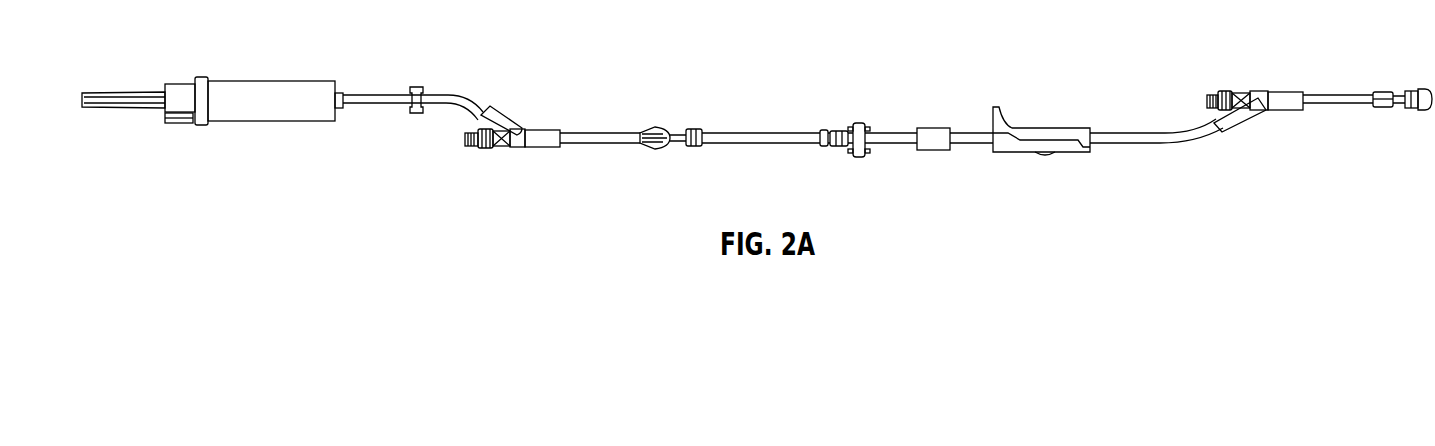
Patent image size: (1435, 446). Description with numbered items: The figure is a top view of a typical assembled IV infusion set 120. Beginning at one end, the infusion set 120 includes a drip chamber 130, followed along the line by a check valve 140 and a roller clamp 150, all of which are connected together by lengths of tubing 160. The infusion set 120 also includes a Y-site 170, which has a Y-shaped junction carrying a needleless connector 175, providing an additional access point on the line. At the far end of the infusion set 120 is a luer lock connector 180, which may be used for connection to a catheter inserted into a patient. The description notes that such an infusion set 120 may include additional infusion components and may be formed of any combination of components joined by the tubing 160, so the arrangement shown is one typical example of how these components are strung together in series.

The infusion set 120 is at (1235, 62).
The drip chamber 130 is at (272, 81).
The check valve 140 is at (857, 122).
The roller clamp 150 is at (1040, 128).
The tubing 160 is at (736, 133).
The Y-site 170 is at (511, 118).
The needleless connector 175 is at (1208, 95).
The luer lock connector 180 is at (1420, 112).